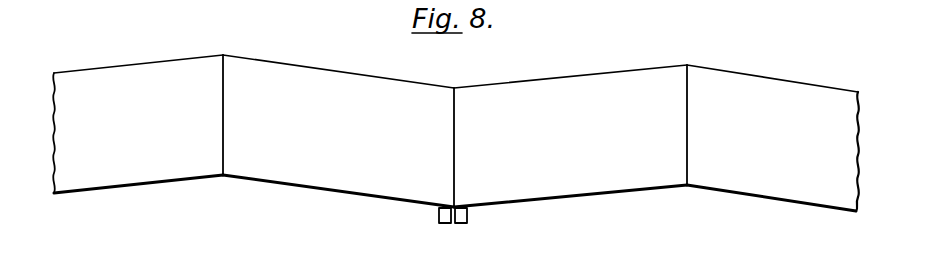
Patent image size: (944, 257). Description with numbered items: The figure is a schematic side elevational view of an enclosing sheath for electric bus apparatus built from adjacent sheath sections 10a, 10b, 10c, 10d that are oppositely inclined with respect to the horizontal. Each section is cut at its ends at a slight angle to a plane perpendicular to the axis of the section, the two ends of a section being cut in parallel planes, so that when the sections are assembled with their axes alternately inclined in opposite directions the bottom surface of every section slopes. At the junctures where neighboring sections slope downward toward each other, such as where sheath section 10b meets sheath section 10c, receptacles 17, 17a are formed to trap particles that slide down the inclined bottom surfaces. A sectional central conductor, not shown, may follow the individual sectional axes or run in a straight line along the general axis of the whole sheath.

The sheath section 10a is at (119, 76).
The sheath section 10b is at (349, 81).
The sheath section 10c is at (548, 90).
The sheath section 10d is at (799, 91).
The receptacle 17 is at (438, 214).
The receptacle 17a is at (469, 214).